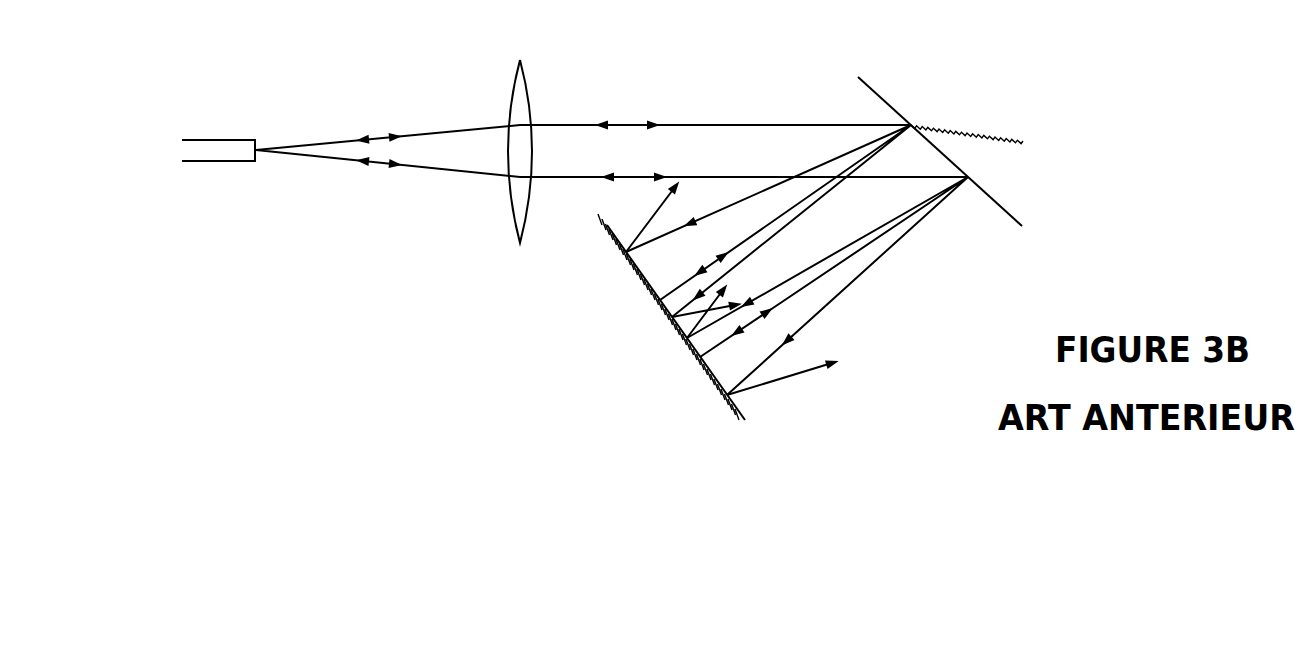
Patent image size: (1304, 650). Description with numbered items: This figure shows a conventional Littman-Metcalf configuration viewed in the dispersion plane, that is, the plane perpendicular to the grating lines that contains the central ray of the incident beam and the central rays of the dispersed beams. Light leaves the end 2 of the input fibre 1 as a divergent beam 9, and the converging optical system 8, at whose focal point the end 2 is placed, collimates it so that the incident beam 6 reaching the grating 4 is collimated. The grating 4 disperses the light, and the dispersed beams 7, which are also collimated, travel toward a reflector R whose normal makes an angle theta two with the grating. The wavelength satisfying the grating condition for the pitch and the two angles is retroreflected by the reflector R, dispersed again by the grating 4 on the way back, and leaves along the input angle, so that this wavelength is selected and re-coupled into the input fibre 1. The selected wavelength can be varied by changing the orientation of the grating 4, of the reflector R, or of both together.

The input fibre 1 is at (208, 146).
The end of the input fibre 2 is at (257, 141).
The grating 4 is at (892, 100).
The incident beam 6 is at (700, 144).
The dispersed beam 7 is at (855, 208).
The converging optical system 8 is at (522, 103).
The beam emitted from the end of the fibre 9 is at (427, 151).
The reflector R is at (672, 342).